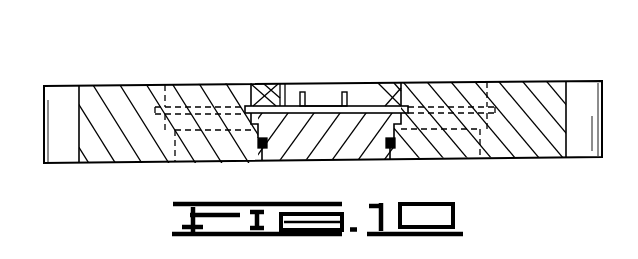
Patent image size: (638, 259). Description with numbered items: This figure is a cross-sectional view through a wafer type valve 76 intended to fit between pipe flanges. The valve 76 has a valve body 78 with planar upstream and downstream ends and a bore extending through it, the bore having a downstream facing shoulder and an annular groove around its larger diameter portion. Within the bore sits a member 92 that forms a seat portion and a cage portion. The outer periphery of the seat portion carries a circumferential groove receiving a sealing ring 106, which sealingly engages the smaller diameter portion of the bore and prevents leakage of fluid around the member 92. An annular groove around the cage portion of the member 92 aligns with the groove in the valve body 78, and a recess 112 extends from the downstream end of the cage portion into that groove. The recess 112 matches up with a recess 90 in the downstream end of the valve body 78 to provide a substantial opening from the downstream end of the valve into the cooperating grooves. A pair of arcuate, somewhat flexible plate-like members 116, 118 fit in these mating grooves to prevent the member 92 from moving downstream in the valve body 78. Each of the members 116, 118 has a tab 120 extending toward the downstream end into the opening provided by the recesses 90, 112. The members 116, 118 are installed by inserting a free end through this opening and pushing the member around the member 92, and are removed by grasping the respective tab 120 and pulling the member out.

The valve 76 is at (65, 83).
The valve body 78 is at (525, 88).
The recess 90 is at (325, 95).
The recess 112 is at (320, 76).
The plate-like member 116 is at (265, 106).
The plate-like member 118 is at (363, 106).
The tab 120 is at (301, 92).
The sealing ring 106 is at (375, 159).
The member 92 is at (398, 138).